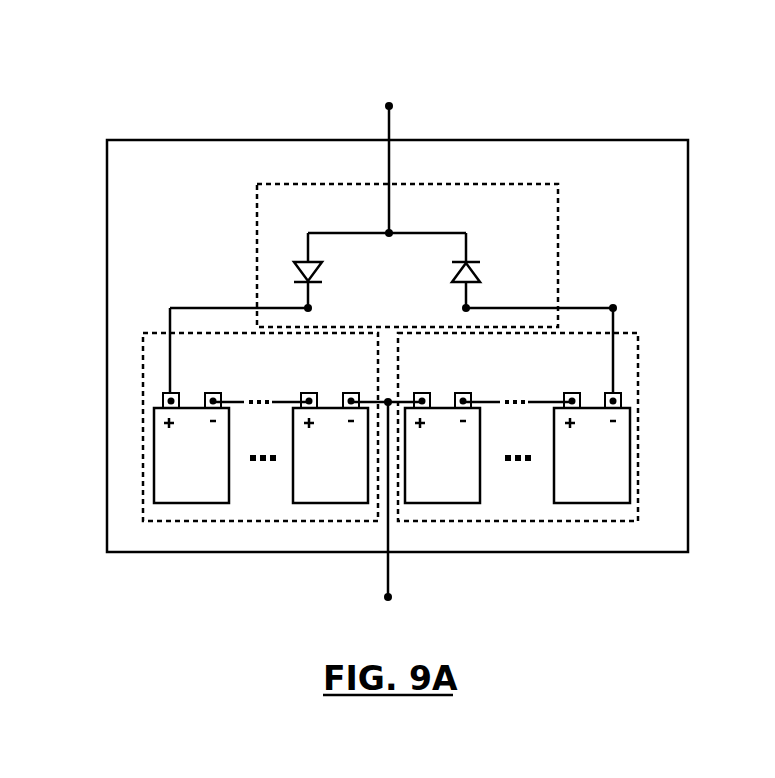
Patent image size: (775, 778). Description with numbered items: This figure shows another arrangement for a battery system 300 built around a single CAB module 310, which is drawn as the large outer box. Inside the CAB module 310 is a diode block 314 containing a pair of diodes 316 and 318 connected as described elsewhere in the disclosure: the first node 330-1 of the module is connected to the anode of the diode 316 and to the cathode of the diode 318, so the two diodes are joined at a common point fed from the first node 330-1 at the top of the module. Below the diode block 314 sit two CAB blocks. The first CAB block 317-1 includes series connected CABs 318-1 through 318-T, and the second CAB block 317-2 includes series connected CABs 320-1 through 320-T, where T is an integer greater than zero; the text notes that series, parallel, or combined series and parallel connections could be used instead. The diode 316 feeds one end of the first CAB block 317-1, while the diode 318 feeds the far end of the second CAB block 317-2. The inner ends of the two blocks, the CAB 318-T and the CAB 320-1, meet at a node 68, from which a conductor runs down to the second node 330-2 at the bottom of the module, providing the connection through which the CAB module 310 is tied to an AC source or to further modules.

The battery system 300 is at (321, 70).
The CAB module 310 is at (632, 140).
The diode block 314 is at (449, 255).
The diode 316 is at (320, 272).
The diode 318 is at (472, 262).
The first CAB block 317-1 is at (260, 471).
The second CAB block 317-2 is at (579, 471).
The CAB 318-1 is at (190, 406).
The CAB 318-T is at (330, 403).
The CAB 320-1 is at (448, 405).
The CAB 320-T is at (632, 452).
The junction node 68 is at (391, 399).
The first node 330-1 is at (394, 102).
The second node 330-2 is at (390, 598).